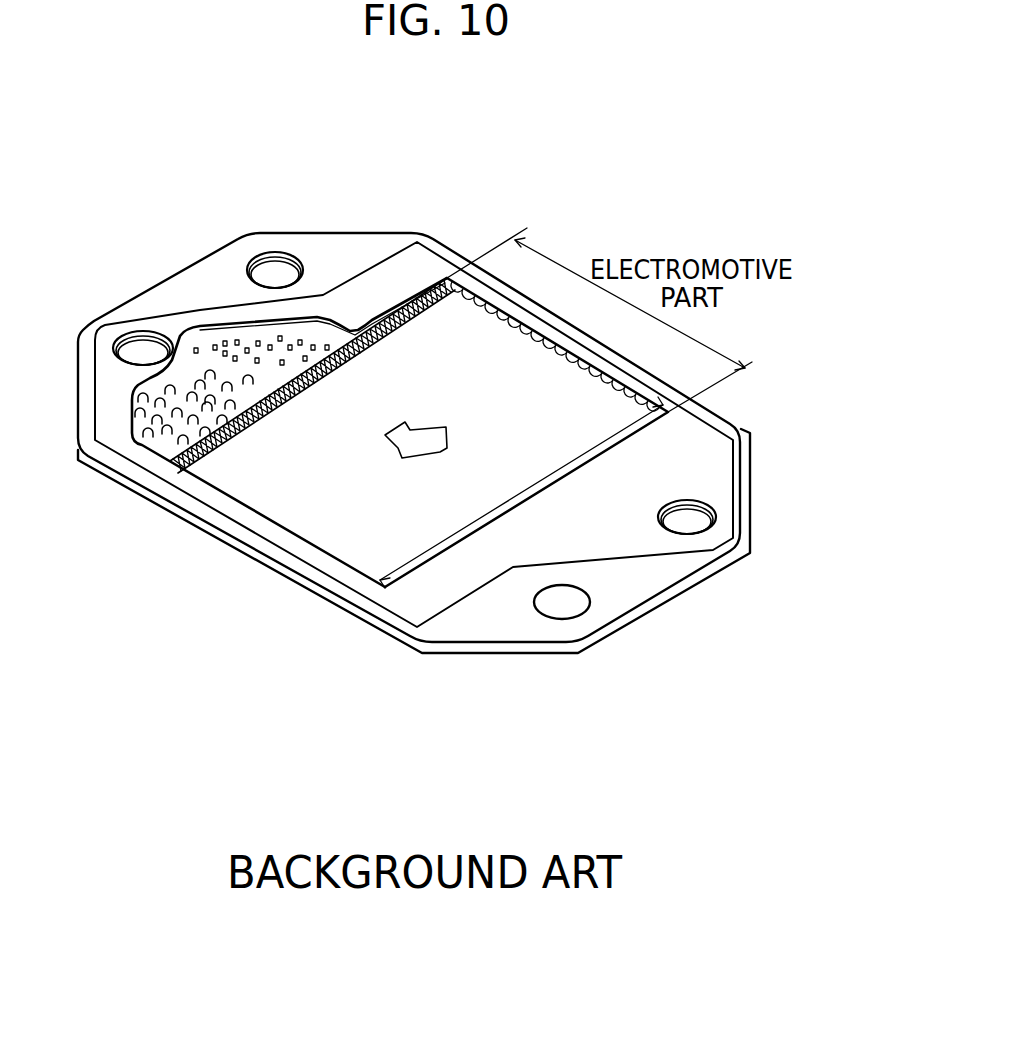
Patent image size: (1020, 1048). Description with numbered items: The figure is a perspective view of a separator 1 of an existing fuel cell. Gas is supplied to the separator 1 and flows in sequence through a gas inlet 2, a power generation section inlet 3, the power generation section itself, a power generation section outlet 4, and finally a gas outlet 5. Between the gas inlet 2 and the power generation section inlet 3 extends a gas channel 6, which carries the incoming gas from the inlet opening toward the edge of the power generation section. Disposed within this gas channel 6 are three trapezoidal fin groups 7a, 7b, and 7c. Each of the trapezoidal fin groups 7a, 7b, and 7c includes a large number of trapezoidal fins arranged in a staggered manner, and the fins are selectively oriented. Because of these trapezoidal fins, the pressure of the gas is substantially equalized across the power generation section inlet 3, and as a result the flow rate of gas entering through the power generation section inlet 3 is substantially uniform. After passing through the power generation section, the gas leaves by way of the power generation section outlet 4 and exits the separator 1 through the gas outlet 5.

The separator 1 is at (448, 97).
The gas inlet 2 is at (147, 335).
The power generation section inlet 3 is at (243, 414).
The power generation section outlet 4 is at (516, 493).
The gas outlet 5 is at (688, 507).
The gas channel 6 is at (223, 335).
The trapezoidal fin group 7a is at (150, 442).
The trapezoidal fin group 7b is at (242, 392).
The trapezoidal fin group 7c is at (297, 338).